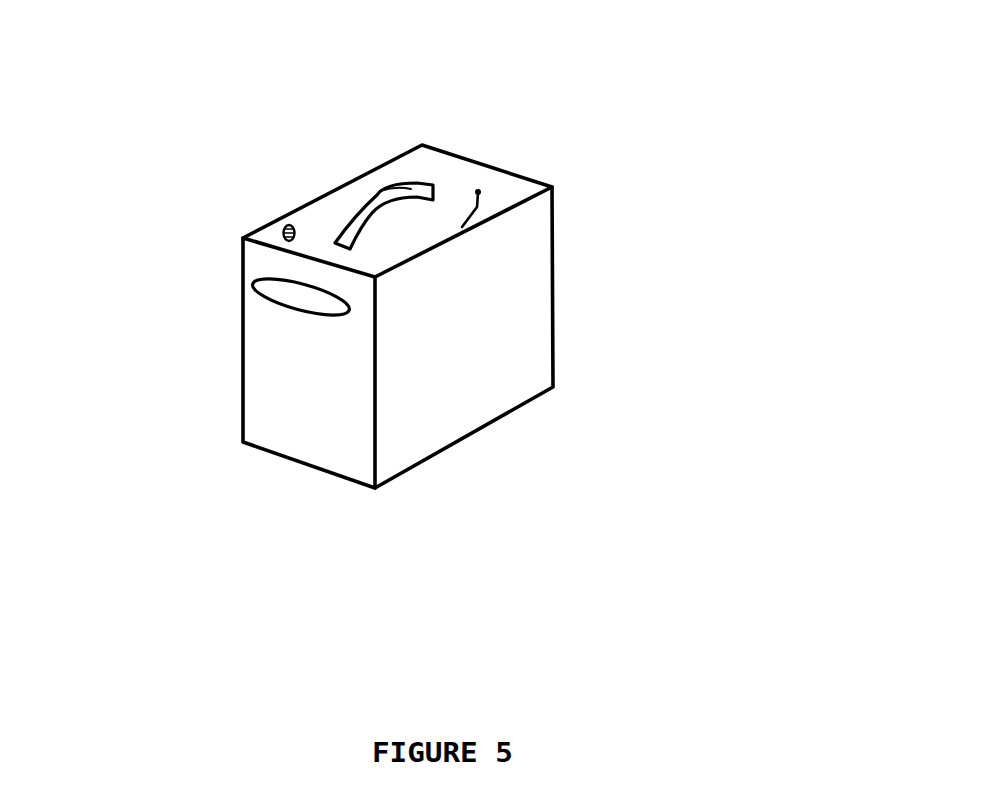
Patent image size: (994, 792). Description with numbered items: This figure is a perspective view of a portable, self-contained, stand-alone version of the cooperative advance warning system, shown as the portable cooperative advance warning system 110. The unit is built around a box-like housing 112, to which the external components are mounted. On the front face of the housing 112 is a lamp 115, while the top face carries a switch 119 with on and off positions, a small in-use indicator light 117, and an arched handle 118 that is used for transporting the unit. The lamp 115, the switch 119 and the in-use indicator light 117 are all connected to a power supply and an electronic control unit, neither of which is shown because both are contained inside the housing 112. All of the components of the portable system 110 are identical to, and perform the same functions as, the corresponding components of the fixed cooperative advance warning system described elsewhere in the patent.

The portable cooperative advance warning system 110 is at (607, 288).
The housing 112 is at (502, 365).
The lamp 115 is at (317, 302).
The in-use indicator light 117 is at (283, 231).
The handle 118 is at (373, 197).
The switch 119 is at (468, 205).